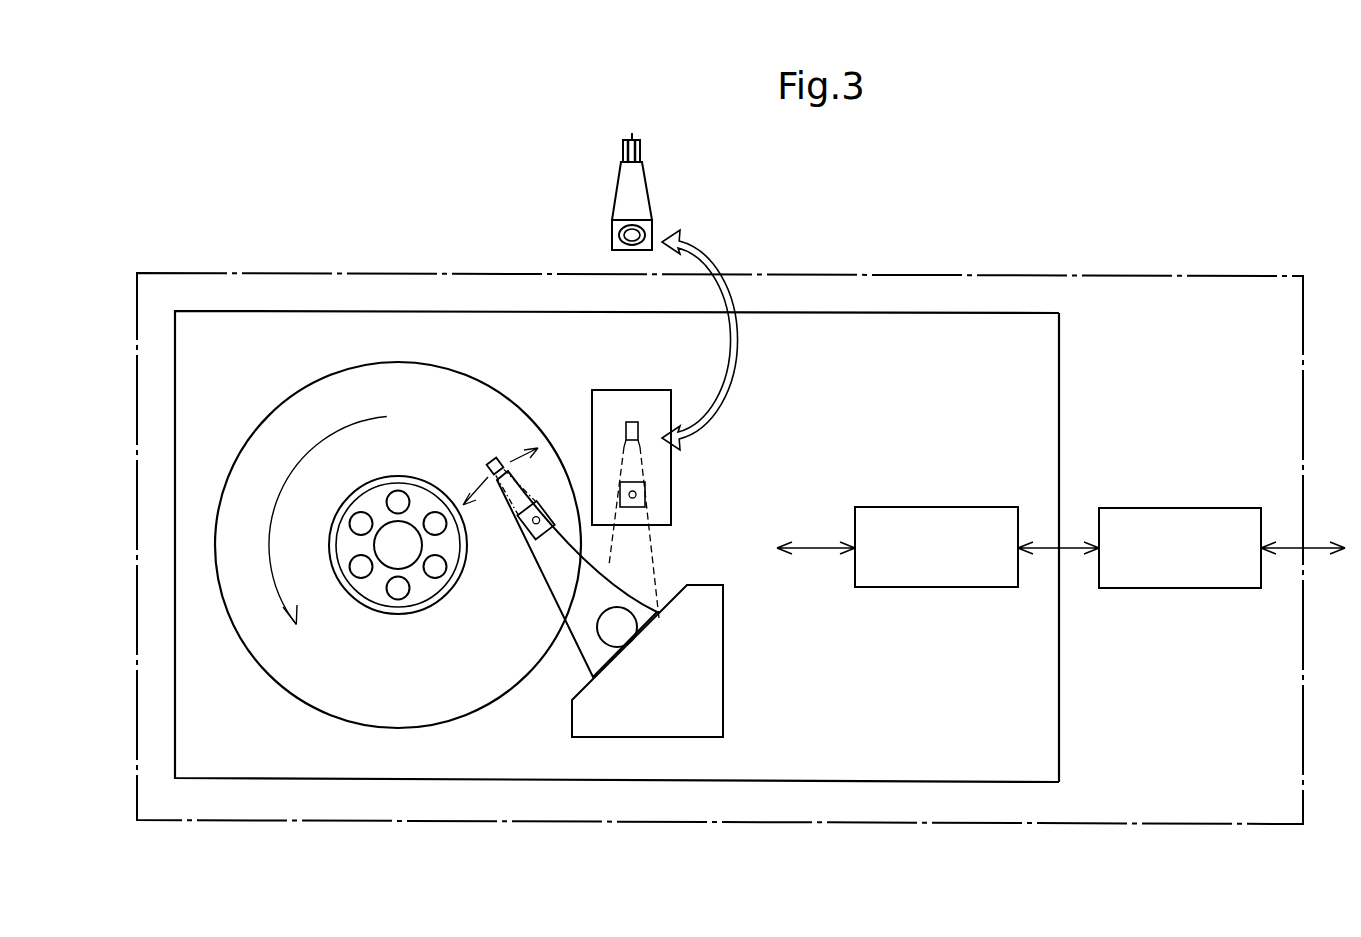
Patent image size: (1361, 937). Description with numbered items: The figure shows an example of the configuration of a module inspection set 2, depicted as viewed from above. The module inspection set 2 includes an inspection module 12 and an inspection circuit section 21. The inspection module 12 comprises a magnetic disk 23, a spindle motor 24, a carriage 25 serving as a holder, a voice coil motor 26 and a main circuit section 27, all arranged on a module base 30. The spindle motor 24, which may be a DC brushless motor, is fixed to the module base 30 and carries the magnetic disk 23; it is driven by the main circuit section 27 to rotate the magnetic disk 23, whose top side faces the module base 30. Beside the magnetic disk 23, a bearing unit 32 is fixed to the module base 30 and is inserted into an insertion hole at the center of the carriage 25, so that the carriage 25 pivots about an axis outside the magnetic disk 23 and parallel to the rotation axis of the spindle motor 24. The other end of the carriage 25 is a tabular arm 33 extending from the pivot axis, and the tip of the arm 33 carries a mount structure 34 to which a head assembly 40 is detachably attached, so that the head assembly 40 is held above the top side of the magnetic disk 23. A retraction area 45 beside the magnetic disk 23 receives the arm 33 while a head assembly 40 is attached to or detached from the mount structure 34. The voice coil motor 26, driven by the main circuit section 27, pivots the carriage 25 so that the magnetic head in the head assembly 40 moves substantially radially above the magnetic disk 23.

The module inspection set 2 is at (1188, 276).
The inspection module 12 is at (825, 302).
The inspection circuit section 21 is at (1180, 508).
The magnetic disk 23 is at (302, 405).
The spindle motor 24 is at (380, 579).
The carriage 25 is at (580, 642).
The voice coil motor 26 is at (738, 700).
The main circuit section 27 is at (938, 507).
The module base 30 is at (1062, 344).
The bearing unit 32 is at (608, 648).
The arm 33 is at (541, 567).
The mount structure 34 is at (525, 540).
The head assembly 40 is at (616, 196).
The retraction area 45 is at (633, 390).